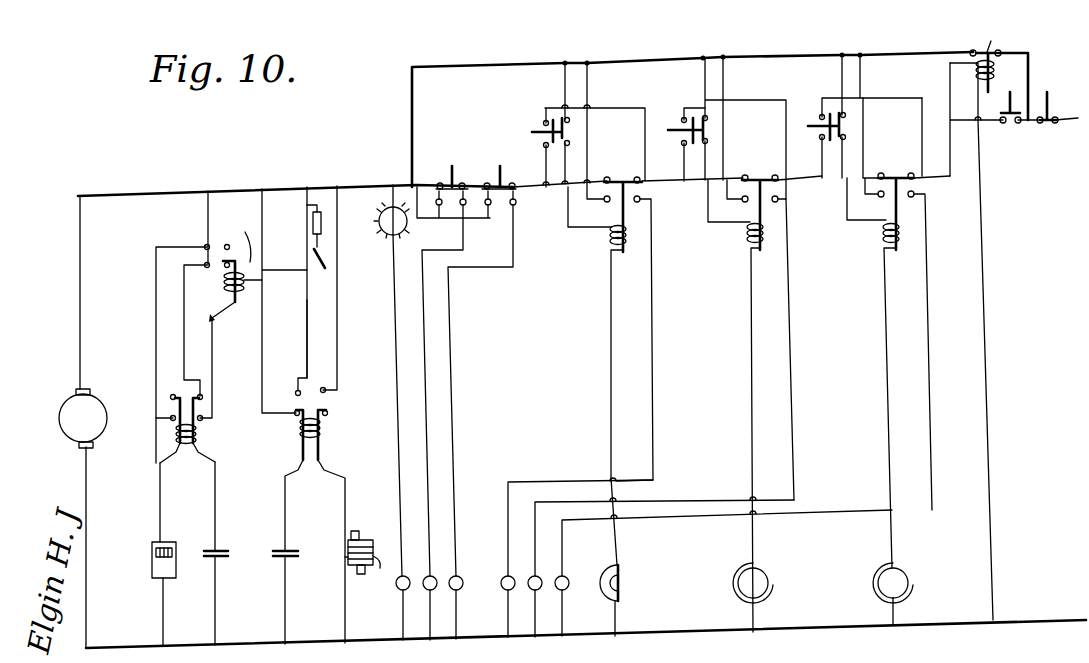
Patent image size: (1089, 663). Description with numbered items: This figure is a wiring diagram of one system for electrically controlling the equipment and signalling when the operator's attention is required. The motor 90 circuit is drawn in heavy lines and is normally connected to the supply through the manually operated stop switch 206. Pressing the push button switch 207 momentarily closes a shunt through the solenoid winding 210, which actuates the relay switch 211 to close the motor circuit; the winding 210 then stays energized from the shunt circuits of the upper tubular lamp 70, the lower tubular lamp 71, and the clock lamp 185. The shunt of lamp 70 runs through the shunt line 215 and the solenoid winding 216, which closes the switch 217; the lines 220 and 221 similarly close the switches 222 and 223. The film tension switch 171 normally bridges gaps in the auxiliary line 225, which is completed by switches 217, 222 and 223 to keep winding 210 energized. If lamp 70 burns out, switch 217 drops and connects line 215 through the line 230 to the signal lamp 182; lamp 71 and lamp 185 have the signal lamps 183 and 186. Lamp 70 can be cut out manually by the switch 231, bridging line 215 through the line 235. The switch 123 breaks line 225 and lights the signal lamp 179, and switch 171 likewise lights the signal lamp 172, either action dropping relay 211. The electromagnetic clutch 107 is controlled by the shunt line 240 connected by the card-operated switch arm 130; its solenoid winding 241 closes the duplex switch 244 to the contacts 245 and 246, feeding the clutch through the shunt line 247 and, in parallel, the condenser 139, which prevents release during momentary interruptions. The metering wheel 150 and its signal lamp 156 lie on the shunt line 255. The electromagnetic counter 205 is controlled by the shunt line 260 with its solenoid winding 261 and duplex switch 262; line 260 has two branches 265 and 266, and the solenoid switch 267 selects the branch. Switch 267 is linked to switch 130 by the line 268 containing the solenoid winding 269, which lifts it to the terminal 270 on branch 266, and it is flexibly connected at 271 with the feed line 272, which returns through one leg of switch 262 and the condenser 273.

The motor 90 is at (72, 428).
The feed line 272 is at (206, 224).
The terminal 270 is at (221, 250).
The solenoid switch 267 is at (243, 238).
The branch 266 is at (156, 352).
The branch 265 is at (190, 362).
The solenoid winding 269 is at (248, 284).
The flexible connection 271 is at (213, 316).
The duplex switch 262 is at (170, 406).
The solenoid winding 261 is at (182, 437).
The shunt line 260 is at (188, 496).
The electromagnetic counter 205 is at (154, 576).
The condenser 273 is at (212, 551).
The condenser 139 is at (284, 551).
The switch arm 130 is at (310, 249).
The line 268 is at (262, 273).
The shunt line 240 is at (307, 352).
The shunt line 247 is at (337, 336).
The contact 245 is at (324, 388).
The contact 246 is at (297, 396).
The duplex switch 244 is at (329, 409).
The solenoid winding 241 is at (322, 431).
The electromagnetic clutch 107 is at (374, 568).
The metering wheel 150 is at (386, 235).
The shunt line 255 is at (392, 272).
The film tension switch 171 is at (446, 181).
The switch 123 is at (500, 181).
The auxiliary line 225 is at (538, 188).
The signal lamp 156 is at (398, 590).
The signal lamp 172 is at (426, 592).
The signal lamp 179 is at (452, 592).
The signal lamp 186 is at (510, 588).
The signal lamp 183 is at (539, 588).
The signal lamp 182 is at (567, 588).
The solenoid actuated switch 223 is at (621, 178).
The line 221 is at (609, 281).
The clock lamp 185 is at (625, 562).
The solenoid actuated switch 222 is at (757, 176).
The line 220 is at (750, 271).
The lower tubular lamp 71 is at (762, 570).
The switch 217 is at (897, 175).
The shunt line 215 is at (842, 79).
The line 235 is at (898, 98).
The switch 231 is at (822, 140).
The solenoid winding 216 is at (884, 236).
The upper tubular lamp 70 is at (905, 568).
The line 230 is at (953, 288).
The relay switch 211 is at (999, 72).
The solenoid winding 210 is at (972, 86).
The push button switch 207 is at (1016, 100).
The stop switch 206 is at (1054, 100).